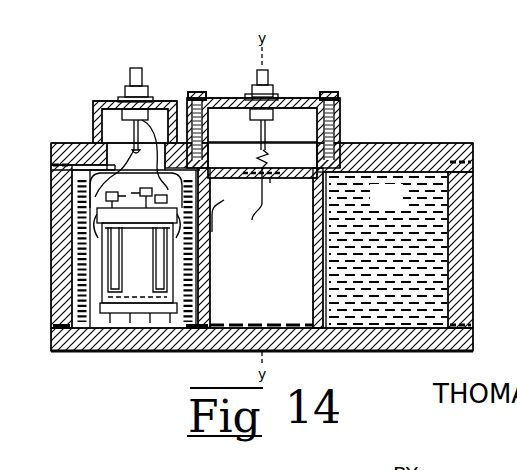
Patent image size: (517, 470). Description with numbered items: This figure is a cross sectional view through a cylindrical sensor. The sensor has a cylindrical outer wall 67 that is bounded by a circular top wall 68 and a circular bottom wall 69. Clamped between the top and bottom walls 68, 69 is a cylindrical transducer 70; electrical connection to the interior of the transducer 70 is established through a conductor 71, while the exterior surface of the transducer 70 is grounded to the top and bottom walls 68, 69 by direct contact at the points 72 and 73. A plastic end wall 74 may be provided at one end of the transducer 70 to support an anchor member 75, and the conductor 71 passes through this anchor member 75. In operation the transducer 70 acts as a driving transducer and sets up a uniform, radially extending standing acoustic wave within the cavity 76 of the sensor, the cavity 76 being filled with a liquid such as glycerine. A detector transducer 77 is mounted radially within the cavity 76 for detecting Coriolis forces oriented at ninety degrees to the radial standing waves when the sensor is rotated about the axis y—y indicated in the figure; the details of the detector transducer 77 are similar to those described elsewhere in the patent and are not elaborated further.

The cylindrical outer wall 67 is at (474, 258).
The top wall 68 is at (356, 143).
The bottom wall 69 is at (474, 346).
The cylindrical transducer 70 is at (316, 247).
The conductor 71 is at (250, 214).
The direct contact 72 is at (198, 327).
The direct contact 73 is at (318, 168).
The plastic end wall 74 is at (223, 191).
The anchor member 75 is at (280, 190).
The cavity 76 is at (398, 208).
The detector transducer 77 is at (147, 269).